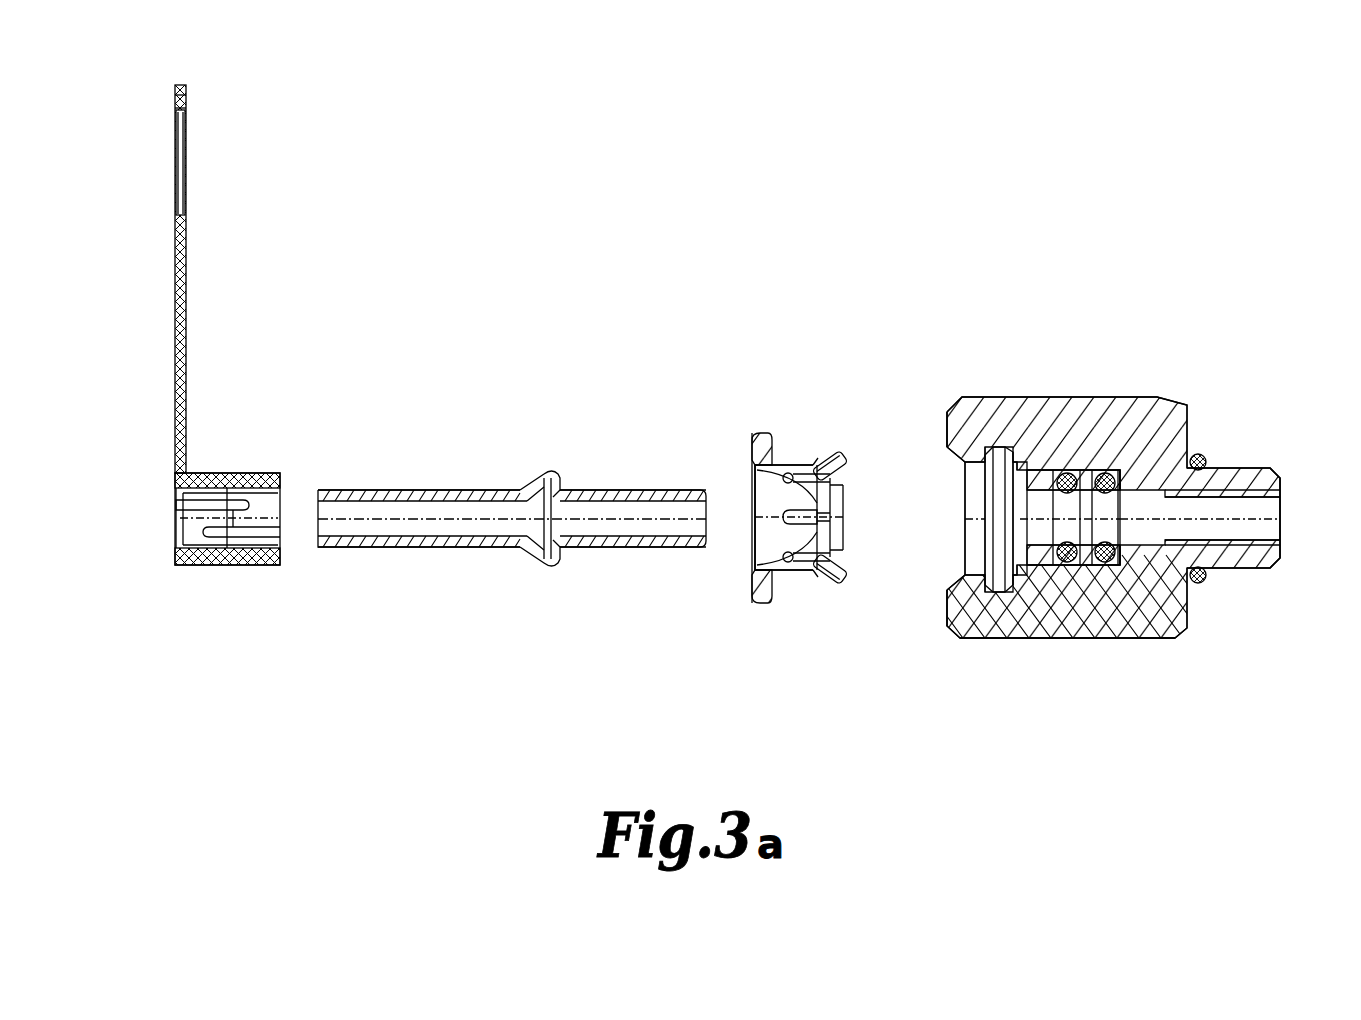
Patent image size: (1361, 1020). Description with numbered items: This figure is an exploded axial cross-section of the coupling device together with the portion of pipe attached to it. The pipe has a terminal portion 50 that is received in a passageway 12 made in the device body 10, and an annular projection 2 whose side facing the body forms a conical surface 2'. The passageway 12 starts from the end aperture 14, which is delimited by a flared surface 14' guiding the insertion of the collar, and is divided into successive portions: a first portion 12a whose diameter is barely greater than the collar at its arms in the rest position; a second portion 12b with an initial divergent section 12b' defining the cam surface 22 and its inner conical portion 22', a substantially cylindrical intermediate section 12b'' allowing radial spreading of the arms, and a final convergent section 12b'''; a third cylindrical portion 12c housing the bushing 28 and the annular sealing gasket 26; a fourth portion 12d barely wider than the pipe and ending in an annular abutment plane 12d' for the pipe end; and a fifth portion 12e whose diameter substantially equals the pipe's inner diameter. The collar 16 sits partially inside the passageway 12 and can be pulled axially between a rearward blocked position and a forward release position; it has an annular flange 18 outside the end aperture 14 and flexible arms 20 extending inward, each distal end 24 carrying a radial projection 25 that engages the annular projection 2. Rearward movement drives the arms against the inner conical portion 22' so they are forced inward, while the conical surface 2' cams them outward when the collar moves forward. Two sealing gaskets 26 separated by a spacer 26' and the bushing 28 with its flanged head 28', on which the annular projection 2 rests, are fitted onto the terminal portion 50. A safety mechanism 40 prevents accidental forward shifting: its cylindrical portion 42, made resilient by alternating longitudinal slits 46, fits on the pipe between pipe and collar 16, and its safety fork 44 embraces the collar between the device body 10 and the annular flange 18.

The annular projection 2 is at (512, 569).
The conical surface 2' is at (540, 477).
The device body 10 is at (1110, 397).
The passageway 12 is at (1203, 442).
The first portion 12a is at (958, 578).
The second portion 12b is at (918, 438).
The initial divergent section 12b' is at (1015, 460).
The intermediate section 12b'' is at (1060, 573).
The final convergent section 12b''' is at (1056, 413).
The third cylindrical portion 12c is at (1160, 638).
The fourth portion 12d is at (1215, 546).
The annular abutment plane 12d' is at (1233, 497).
The fifth portion 12e is at (1250, 512).
The end aperture 14 is at (906, 537).
The flared surface 14' is at (930, 574).
The collar 16 is at (798, 434).
The annular flange 18 is at (760, 572).
The flexible arms 20 is at (786, 600).
The cam surface 22 is at (982, 456).
The inner conical portion 22' is at (1007, 578).
The distal end 24 is at (836, 455).
The radial projection 25 is at (755, 440).
The annular sealing gasket 26 is at (1132, 565).
The spacer 26' is at (1159, 450).
The bushing 28 is at (1075, 452).
The flanged head 28' is at (1127, 572).
The safety mechanism 40 is at (199, 592).
The cylindrical portion 42 is at (236, 472).
The safety fork 44 is at (186, 258).
The longitudinal slits 46 is at (262, 506).
The terminal portion 50 is at (458, 490).